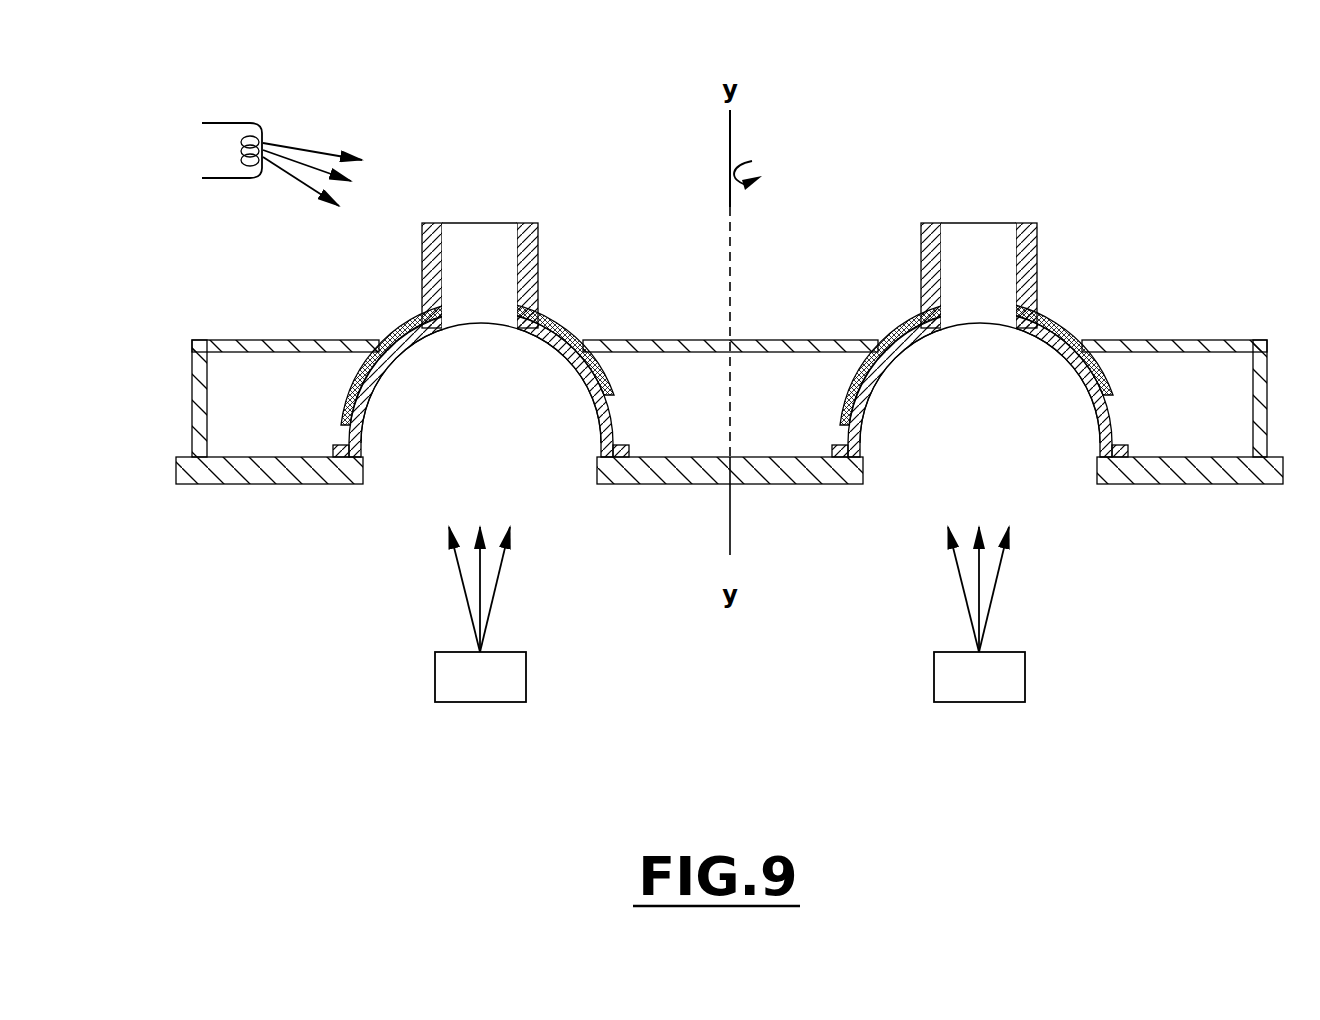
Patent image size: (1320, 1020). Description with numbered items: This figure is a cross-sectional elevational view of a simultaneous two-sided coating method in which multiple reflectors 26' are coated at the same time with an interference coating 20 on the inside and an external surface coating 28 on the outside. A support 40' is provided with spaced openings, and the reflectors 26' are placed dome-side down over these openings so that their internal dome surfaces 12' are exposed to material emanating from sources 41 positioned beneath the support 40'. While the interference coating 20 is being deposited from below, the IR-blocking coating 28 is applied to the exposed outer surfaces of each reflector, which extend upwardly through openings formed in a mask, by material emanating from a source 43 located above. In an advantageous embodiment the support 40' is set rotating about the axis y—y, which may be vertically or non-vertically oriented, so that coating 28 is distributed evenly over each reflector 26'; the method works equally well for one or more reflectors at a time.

The source 43 is at (225, 122).
The external surface coating 28 is at (538, 262).
The reflector 26' is at (783, 283).
The interference coating 20 is at (380, 382).
The interior surface 12' is at (730, 384).
The support 40' is at (729, 491).
The sources 41 is at (527, 675).